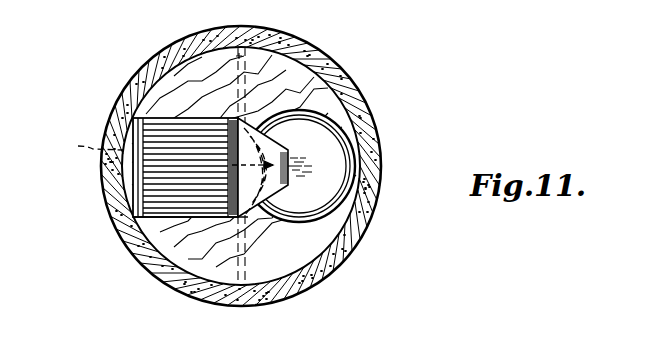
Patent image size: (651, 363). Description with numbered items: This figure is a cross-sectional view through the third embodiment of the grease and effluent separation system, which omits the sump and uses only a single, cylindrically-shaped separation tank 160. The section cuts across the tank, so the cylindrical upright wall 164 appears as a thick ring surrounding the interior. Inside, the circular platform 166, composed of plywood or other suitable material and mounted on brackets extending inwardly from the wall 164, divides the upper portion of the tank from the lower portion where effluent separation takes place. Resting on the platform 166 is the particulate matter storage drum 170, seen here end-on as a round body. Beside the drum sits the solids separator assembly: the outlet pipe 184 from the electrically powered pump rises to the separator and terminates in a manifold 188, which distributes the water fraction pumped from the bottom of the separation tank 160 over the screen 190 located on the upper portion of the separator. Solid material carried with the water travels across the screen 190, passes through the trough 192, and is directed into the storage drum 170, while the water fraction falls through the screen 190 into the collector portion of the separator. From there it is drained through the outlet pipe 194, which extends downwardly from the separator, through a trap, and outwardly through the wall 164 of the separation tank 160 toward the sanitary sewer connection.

The separation tank 160 is at (369, 108).
The upright wall 164 is at (318, 272).
The circular platform 166 is at (262, 291).
The particulate matter storage drum 170 is at (351, 163).
The outlet pipe 184 is at (89, 136).
The manifold 188 is at (108, 197).
The screen 190 is at (177, 140).
The trough 192 is at (272, 145).
The outlet pipe 194 is at (187, 160).